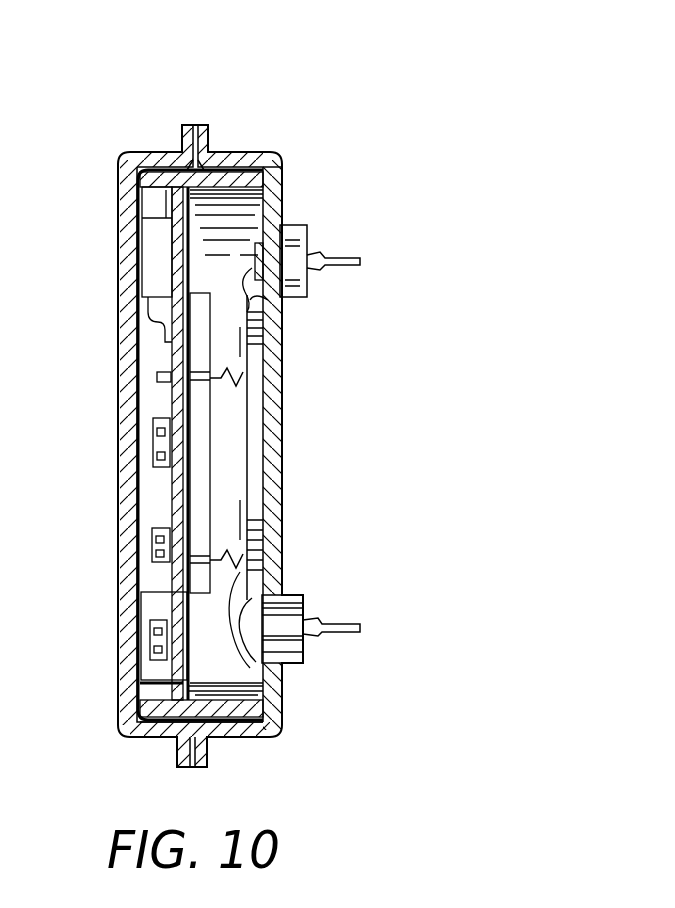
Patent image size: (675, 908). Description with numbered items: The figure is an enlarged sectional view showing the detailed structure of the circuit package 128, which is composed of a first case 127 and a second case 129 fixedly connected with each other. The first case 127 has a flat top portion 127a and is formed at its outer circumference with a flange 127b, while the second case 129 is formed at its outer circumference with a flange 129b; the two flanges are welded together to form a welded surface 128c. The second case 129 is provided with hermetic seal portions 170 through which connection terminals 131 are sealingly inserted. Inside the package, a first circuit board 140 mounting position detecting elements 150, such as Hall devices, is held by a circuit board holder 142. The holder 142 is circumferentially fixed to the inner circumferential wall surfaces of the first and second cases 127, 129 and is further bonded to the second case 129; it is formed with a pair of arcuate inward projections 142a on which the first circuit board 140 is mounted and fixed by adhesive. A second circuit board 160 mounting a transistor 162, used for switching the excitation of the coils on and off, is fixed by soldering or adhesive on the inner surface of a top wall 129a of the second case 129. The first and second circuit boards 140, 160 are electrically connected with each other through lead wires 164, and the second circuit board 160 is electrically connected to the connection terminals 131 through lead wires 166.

The first case 127 is at (121, 151).
The flat top portion 127a is at (118, 318).
The flange 127b is at (183, 138).
The circuit package 128 is at (293, 118).
The welded surface 128c is at (195, 125).
The second case 129 is at (278, 150).
The top wall 129a is at (283, 180).
The flange 129b is at (207, 138).
The connection terminals 131 is at (336, 258).
The first circuit board 140 is at (135, 682).
The circuit board holder 142 is at (152, 735).
The arcuate inward projections 142a is at (262, 206).
The position detecting elements 150 is at (135, 638).
The second circuit board 160 is at (247, 373).
The transistor 162 is at (243, 467).
The lead wires 164 is at (263, 352).
The lead wires 166 is at (273, 305).
The hermetic seal portions 170 is at (315, 637).